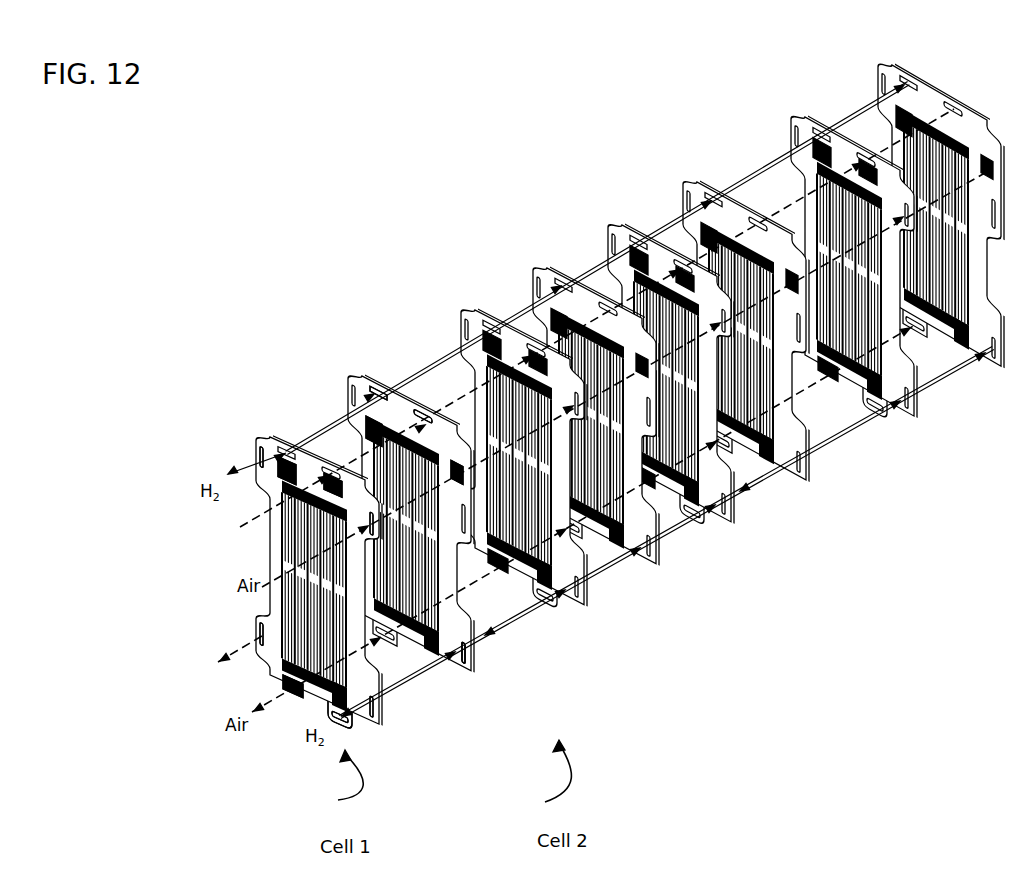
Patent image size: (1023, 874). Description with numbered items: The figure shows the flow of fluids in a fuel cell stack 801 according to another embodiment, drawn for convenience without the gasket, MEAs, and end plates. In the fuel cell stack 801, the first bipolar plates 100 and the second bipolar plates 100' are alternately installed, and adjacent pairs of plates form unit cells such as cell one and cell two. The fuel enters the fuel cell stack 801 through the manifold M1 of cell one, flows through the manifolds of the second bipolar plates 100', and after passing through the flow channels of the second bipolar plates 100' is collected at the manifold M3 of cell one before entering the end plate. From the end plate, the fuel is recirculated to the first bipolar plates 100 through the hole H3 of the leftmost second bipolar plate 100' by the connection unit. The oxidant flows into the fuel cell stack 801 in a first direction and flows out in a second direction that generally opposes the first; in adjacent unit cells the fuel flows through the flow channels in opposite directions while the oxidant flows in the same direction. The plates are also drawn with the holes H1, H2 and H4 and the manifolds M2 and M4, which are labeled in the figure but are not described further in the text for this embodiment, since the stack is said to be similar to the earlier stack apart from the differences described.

The first hole H1 is at (259, 457).
The second hole H2 is at (367, 524).
The hole H3 is at (378, 713).
The fourth hole H4 is at (256, 634).
The manifold M1 is at (288, 455).
The second manifold M2 is at (333, 465).
The manifold M3 is at (342, 729).
The fourth manifold M4 is at (284, 688).
The first bipolar plate 100 is at (630, 409).
The second bipolar plate 100' is at (534, 486).
The fuel cell stack 801 is at (611, 416).